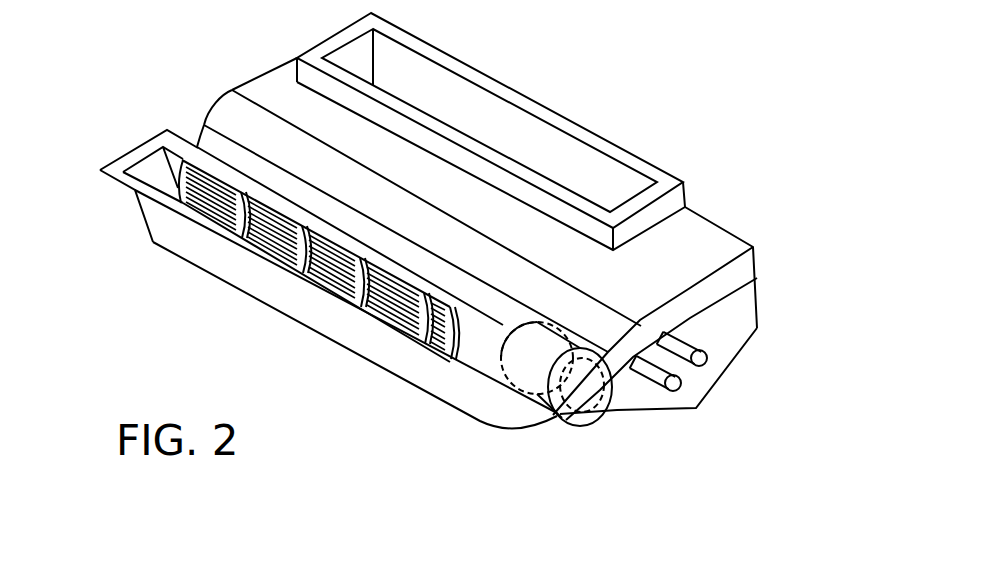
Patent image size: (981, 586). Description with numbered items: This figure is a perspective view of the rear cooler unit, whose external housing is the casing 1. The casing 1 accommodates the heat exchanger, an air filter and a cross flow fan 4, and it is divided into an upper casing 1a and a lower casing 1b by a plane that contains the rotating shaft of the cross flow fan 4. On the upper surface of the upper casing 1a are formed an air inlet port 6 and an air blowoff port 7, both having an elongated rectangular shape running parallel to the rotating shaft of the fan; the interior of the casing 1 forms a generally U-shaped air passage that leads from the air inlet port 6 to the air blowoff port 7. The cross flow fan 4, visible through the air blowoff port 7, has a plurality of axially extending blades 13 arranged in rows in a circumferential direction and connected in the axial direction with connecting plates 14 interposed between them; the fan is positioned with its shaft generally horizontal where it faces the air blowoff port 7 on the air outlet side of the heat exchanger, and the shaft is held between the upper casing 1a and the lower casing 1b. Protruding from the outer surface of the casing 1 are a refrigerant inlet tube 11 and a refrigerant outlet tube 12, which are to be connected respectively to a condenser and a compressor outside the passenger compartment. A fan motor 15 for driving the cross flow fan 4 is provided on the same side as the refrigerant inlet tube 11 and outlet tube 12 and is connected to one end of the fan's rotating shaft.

The casing 1 is at (481, 220).
The upper casing 1a is at (510, 216).
The lower casing 1b is at (835, 197).
The cross flow fan 4 is at (179, 189).
The air inlet port 6 is at (573, 140).
The air blowoff port 7 is at (392, 316).
The refrigerant inlet tube 11 is at (714, 366).
The refrigerant outlet tube 12 is at (667, 398).
The blades 13 is at (277, 247).
The connecting plates 14 is at (231, 232).
The fan motor 15 is at (582, 428).